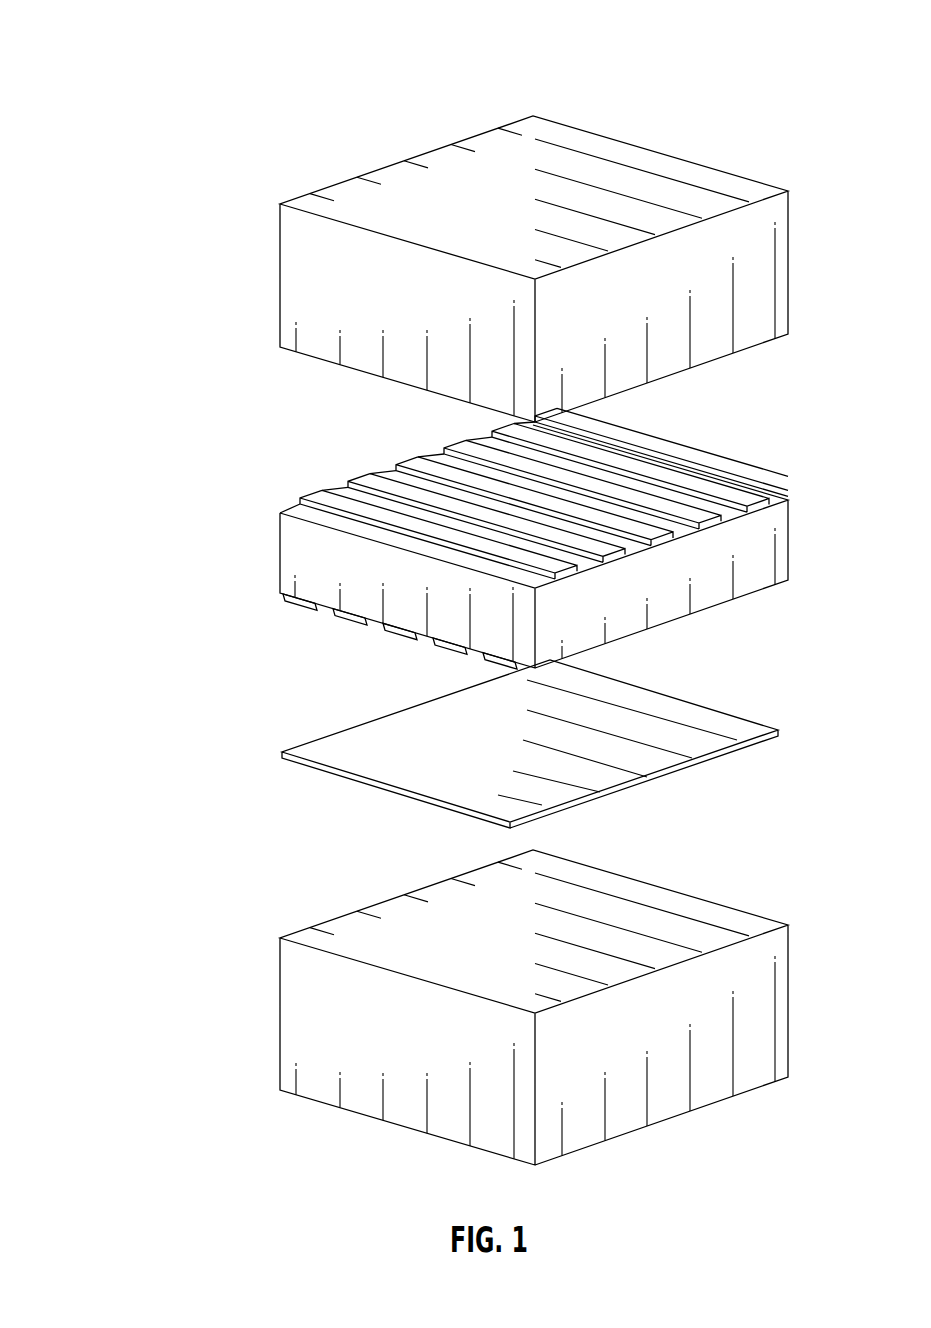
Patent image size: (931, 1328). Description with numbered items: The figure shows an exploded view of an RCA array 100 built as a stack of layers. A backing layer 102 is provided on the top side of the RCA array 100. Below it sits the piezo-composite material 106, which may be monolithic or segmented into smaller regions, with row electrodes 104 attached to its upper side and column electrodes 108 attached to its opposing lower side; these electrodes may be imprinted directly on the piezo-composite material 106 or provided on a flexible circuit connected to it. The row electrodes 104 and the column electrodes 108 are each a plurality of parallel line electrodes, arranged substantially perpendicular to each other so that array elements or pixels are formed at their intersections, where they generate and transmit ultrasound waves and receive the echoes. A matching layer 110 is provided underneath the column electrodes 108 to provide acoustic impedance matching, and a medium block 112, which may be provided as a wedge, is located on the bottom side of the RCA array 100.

The RCA array 100 is at (173, 40).
The backing layer 102 is at (280, 258).
The row electrodes 104 is at (310, 492).
The piezo-composite material 106 is at (227, 588).
The column electrodes 108 is at (313, 609).
The matching layer 110 is at (282, 752).
The medium block 112 is at (280, 998).